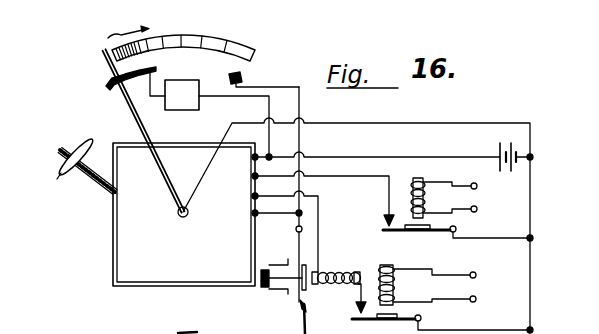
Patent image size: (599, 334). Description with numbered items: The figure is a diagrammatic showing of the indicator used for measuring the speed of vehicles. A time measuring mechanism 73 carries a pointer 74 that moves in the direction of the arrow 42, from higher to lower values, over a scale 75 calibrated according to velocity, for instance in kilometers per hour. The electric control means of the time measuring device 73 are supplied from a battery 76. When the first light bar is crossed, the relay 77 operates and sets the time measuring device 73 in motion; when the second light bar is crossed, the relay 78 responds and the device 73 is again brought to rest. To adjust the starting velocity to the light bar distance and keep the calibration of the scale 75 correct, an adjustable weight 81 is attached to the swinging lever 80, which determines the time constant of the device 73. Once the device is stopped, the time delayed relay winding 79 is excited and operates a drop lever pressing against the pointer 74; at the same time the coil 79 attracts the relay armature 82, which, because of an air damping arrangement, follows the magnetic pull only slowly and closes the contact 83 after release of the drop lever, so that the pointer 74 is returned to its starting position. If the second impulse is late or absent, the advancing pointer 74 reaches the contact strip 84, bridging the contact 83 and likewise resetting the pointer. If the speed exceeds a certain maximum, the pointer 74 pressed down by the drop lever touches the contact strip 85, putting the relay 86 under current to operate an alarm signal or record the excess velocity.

The arrow 42 is at (116, 36).
The time measuring mechanism 73 is at (184, 214).
The pointer 74 is at (130, 115).
The scale 75 is at (252, 53).
The battery 76 is at (498, 148).
The relay 77 is at (456, 208).
The relay 78 is at (441, 297).
The time delayed relay 79 is at (334, 268).
The swinging lever 80 is at (100, 177).
The adjustable weight 81 is at (62, 170).
The relay armature 82 is at (298, 247).
The contact 83 is at (300, 307).
The contact strip 84 is at (244, 78).
The contact strip 85 is at (156, 69).
The relay 86 is at (182, 95).